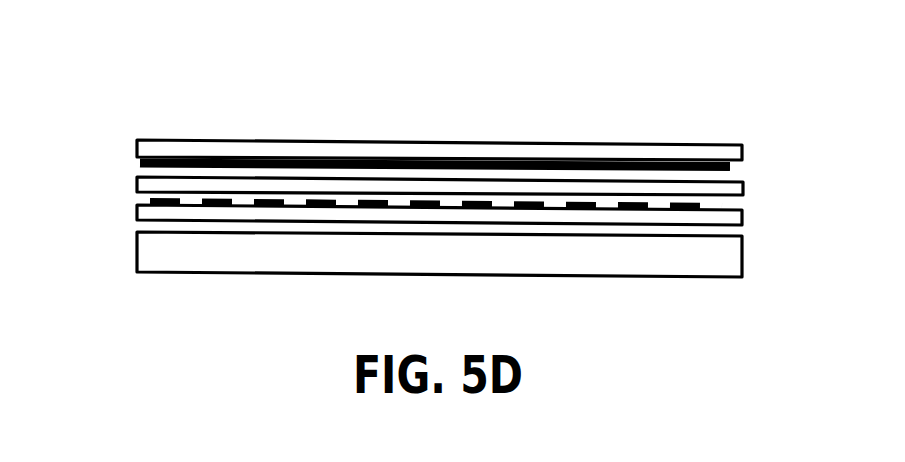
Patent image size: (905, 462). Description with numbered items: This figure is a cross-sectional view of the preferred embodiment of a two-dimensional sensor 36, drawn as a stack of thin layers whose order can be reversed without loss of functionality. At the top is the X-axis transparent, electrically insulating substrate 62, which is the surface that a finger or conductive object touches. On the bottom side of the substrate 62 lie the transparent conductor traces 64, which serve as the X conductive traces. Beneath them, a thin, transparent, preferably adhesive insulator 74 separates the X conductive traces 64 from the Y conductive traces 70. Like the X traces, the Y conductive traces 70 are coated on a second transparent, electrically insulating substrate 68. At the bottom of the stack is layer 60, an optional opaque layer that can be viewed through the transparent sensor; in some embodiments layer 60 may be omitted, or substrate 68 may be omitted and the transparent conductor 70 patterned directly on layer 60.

The two-dimensional sensor 36 is at (345, 90).
The transparent, electrically insulating substrate 62 is at (160, 140).
The transparent conductor traces 64 is at (152, 163).
The insulator 74 is at (741, 181).
The Y conductive traces 70 is at (740, 208).
The transparent, electrically insulating substrate 68 is at (740, 226).
The opaque layer 60 is at (137, 247).